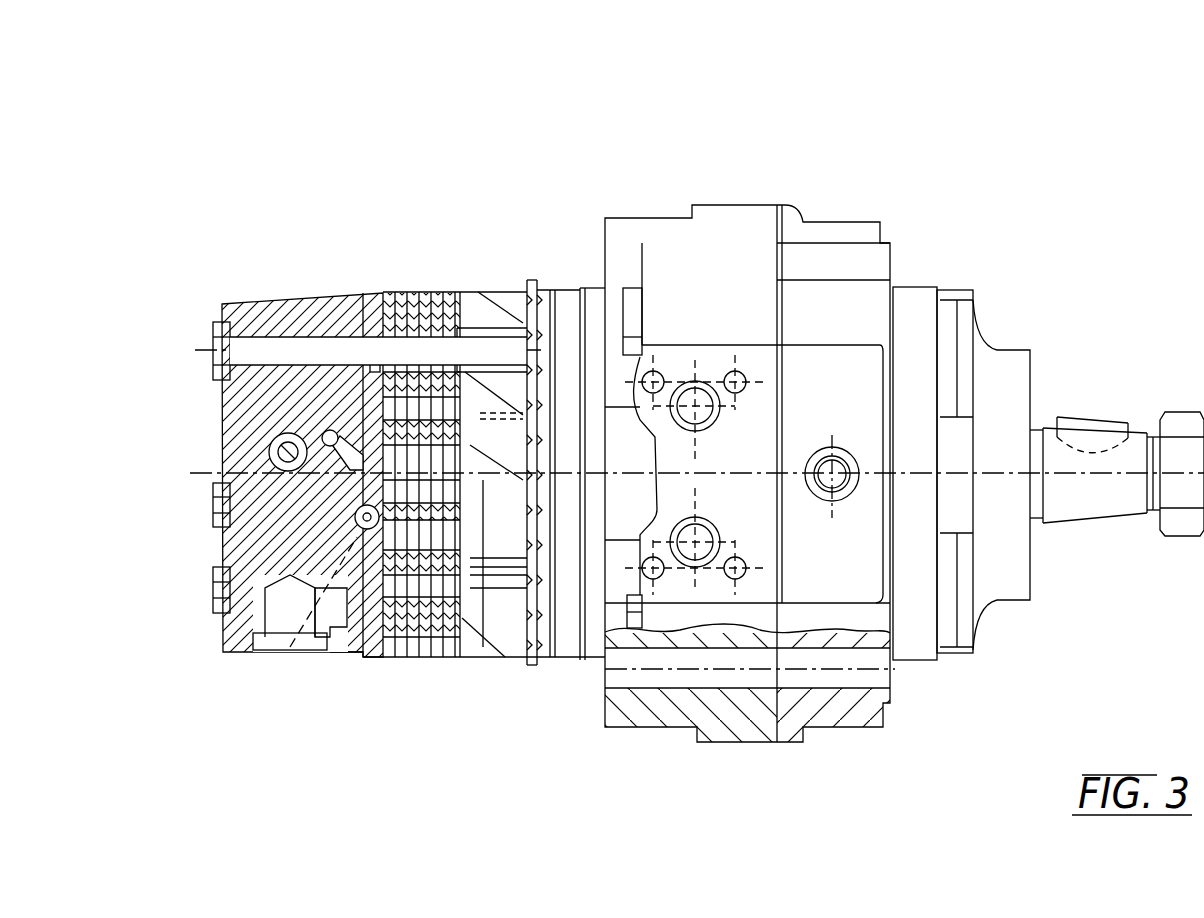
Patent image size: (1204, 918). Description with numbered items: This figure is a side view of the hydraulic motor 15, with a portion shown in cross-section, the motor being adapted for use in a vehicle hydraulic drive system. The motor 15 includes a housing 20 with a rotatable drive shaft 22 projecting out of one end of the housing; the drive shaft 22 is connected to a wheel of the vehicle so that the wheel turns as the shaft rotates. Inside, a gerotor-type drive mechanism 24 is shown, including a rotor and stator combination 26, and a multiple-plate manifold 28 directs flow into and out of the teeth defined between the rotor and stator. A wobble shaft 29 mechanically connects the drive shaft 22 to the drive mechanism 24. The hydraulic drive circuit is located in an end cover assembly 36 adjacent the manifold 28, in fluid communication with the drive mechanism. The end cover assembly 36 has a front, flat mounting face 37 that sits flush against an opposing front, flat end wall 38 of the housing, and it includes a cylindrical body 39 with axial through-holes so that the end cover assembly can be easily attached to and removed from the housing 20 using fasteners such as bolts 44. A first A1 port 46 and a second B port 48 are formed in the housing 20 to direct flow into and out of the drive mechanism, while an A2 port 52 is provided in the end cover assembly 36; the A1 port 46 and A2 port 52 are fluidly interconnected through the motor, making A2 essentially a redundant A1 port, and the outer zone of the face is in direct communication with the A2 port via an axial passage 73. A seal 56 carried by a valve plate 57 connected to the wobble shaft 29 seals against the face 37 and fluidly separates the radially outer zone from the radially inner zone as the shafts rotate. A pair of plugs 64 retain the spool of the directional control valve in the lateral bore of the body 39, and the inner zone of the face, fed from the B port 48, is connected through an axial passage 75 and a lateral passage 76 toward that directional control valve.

The hydraulic motor 15 is at (658, 406).
The housing 20 is at (817, 454).
The drive shaft 22 is at (1095, 510).
The drive mechanism 24 is at (488, 278).
The rotor and stator combination 26 is at (507, 647).
The multiple-plate manifold 28 is at (423, 657).
The wobble shaft 29 is at (483, 647).
The end cover assembly 36 is at (290, 290).
The mounting face 37 is at (380, 330).
The end wall 38 is at (357, 657).
The cylindrical body 39 is at (348, 657).
The bolts 44 is at (216, 323).
The A1 port 46 is at (699, 392).
The B port 48 is at (700, 527).
The A2 port 52 is at (278, 645).
The seal 56 is at (290, 647).
The valve plate 57 is at (380, 360).
The plugs 64 is at (270, 449).
The axial passage 73 is at (305, 642).
The axial passage 75 is at (347, 432).
The lateral passage 76 is at (290, 493).